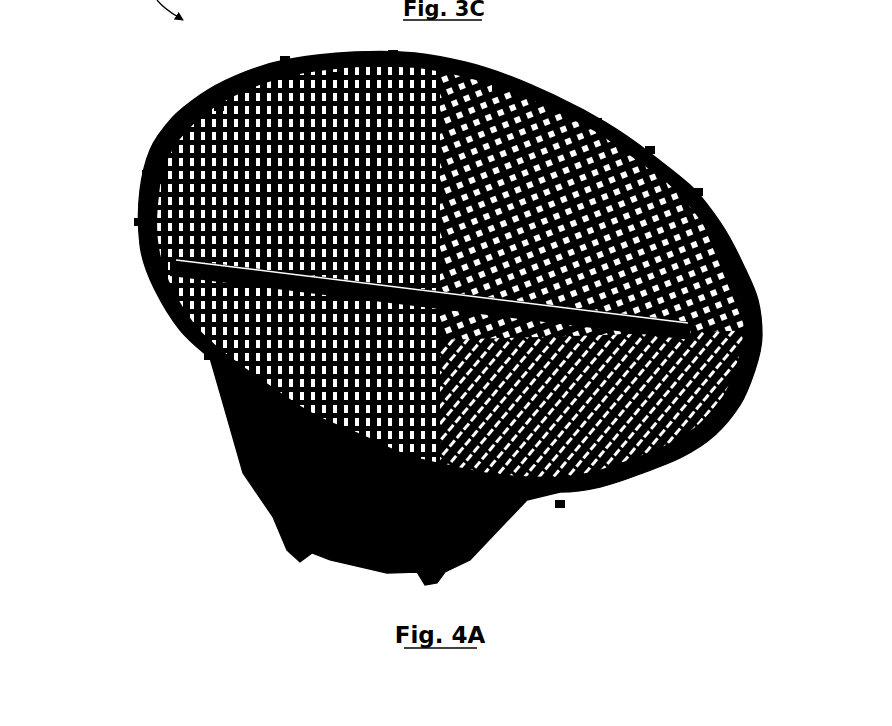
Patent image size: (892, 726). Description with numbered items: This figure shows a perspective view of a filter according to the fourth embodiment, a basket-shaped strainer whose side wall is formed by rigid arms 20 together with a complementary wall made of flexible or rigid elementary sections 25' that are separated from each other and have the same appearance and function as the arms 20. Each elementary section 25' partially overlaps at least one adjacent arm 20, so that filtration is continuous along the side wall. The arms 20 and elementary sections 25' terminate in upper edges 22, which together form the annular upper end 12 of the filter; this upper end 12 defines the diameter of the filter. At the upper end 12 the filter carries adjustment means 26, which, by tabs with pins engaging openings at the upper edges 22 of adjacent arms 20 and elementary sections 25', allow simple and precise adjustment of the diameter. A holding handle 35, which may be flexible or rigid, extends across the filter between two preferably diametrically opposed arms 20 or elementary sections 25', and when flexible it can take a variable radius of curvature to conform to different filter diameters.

The upper end 12 is at (450, 292).
The rigid arms 20 is at (220, 107).
The upper edges 22 is at (558, 103).
The elementary sections 25' is at (448, 203).
The adjustment means 26 is at (285, 60).
The holding handle 35 is at (653, 337).